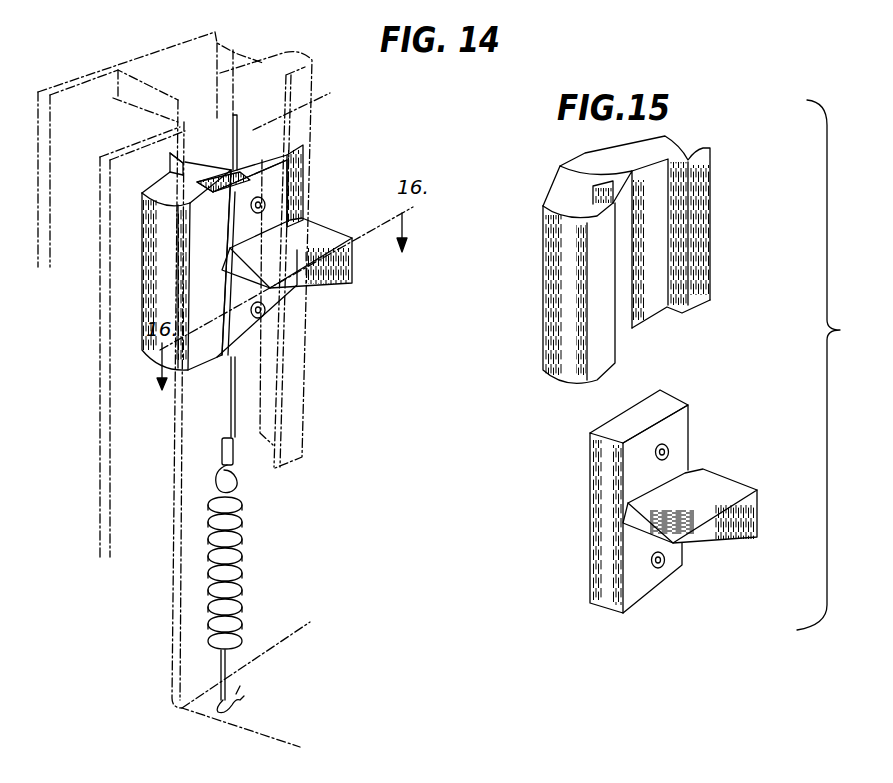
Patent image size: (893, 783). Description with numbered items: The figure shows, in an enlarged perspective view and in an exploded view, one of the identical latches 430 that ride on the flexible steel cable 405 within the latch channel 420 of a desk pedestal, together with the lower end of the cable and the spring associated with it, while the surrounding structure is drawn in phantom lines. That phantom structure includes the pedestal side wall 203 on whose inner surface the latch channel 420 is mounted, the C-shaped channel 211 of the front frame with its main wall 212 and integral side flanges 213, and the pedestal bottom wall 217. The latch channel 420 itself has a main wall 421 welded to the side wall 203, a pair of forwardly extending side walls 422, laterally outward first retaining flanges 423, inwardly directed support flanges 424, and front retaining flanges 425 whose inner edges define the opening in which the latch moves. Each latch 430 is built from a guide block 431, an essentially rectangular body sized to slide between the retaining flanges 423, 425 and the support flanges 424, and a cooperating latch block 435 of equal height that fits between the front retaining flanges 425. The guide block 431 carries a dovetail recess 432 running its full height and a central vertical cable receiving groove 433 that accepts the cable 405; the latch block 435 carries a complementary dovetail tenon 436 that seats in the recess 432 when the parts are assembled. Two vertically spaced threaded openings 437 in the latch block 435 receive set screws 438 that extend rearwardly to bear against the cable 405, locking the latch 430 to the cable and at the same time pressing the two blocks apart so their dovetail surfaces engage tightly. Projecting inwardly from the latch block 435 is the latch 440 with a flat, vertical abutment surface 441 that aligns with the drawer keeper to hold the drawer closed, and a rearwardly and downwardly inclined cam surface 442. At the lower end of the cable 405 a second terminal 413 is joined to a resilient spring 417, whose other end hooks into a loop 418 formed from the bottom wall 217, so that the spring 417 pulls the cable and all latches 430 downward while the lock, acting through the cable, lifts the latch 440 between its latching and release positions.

In FIG. 14, the C-shaped channel 211 is at (98, 300).
In FIG. 14, the main wall 212 is at (122, 146).
In FIG. 14, the side flange 213 is at (88, 72).
In FIG. 14, the bottom wall 217 is at (233, 727).
In FIG. 14, the side wall 203 is at (178, 52).
In FIG. 14, the flexible steel cable 405 is at (240, 118).
In FIG. 14, the second terminal 413 is at (240, 455).
In FIG. 14, the resilient spring 417 is at (240, 580).
In FIG. 14, the loop 418 is at (240, 713).
In FIG. 14, the latch channel 420 is at (160, 62).
In FIG. 14, the main wall 421 is at (135, 62).
In FIG. 14, the side wall 422 is at (228, 45).
In FIG. 14, the first retaining flange 423 is at (238, 62).
In FIG. 14, the support flange 424 is at (290, 55).
In FIG. 14, the front retaining flange 425 is at (316, 72).
In FIG. 14, the latch 430 is at (242, 185).
In FIG. 15, the latch 430 is at (631, 361).
In FIG. 14, the guide block 431 is at (243, 160).
In FIG. 15, the guide block 431 is at (558, 243).
In FIG. 14, the dovetail recess 432 is at (170, 190).
In FIG. 15, the dovetail recess 432 is at (580, 177).
In FIG. 14, the cable receiving groove 433 is at (223, 182).
In FIG. 15, the cable receiving groove 433 is at (584, 156).
In FIG. 14, the latch block 435 is at (278, 315).
In FIG. 15, the latch block 435 is at (593, 532).
In FIG. 14, the dovetail tenon 436 is at (262, 162).
In FIG. 15, the dovetail tenon 436 is at (597, 468).
In FIG. 15, the opening 437 is at (670, 446).
In FIG. 14, the set screw 438 is at (270, 200).
In FIG. 15, the set screw 438 is at (670, 452).
In FIG. 14, the latch 440 is at (307, 245).
In FIG. 15, the latch 440 is at (743, 507).
In FIG. 14, the abutment surface 441 is at (352, 262).
In FIG. 15, the abutment surface 441 is at (757, 515).
In FIG. 14, the cam surface 442 is at (322, 285).
In FIG. 15, the cam surface 442 is at (715, 540).